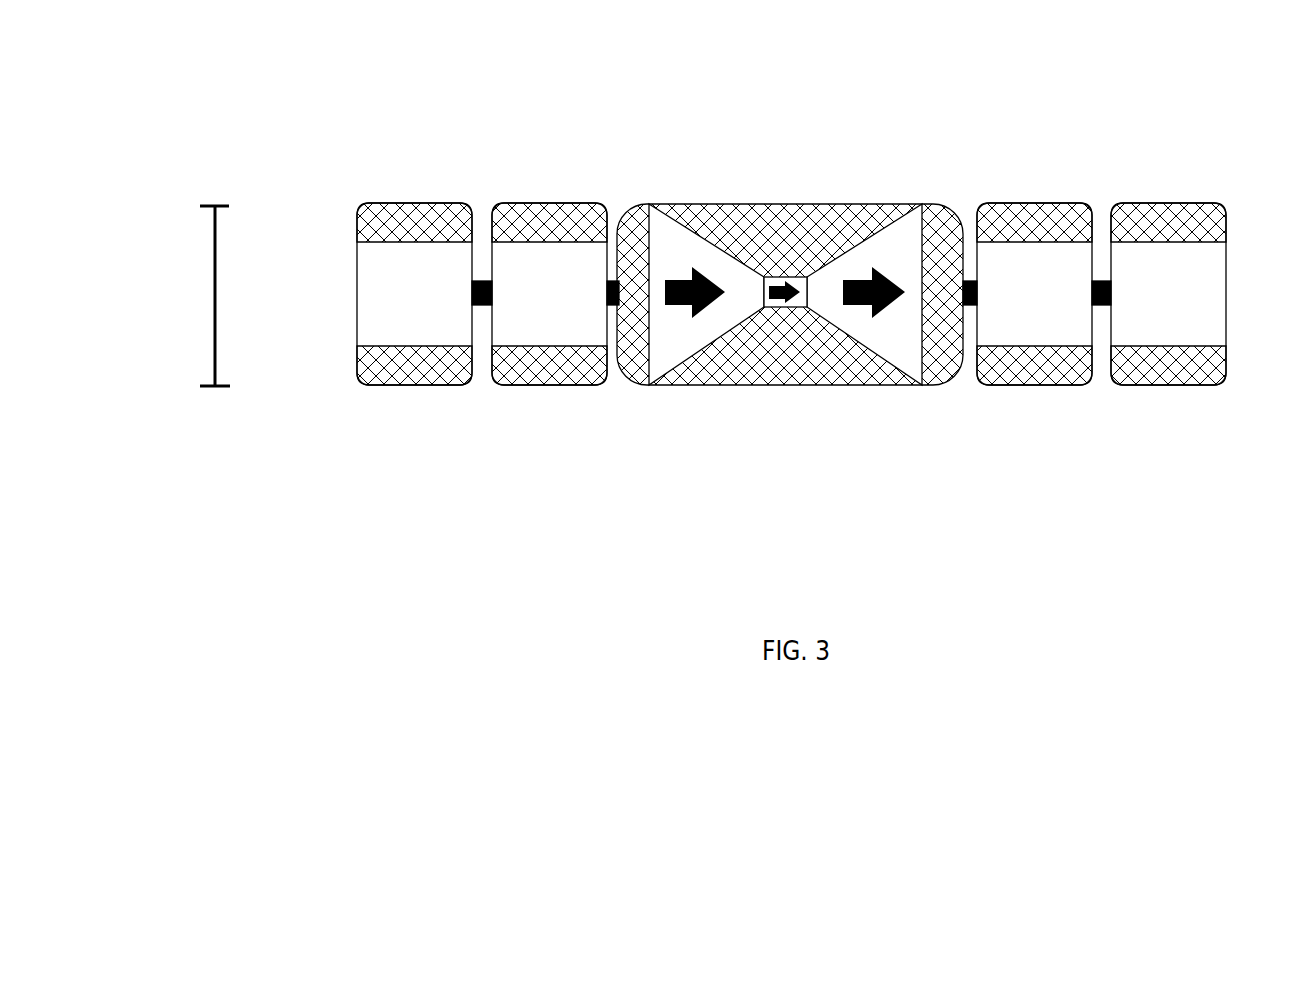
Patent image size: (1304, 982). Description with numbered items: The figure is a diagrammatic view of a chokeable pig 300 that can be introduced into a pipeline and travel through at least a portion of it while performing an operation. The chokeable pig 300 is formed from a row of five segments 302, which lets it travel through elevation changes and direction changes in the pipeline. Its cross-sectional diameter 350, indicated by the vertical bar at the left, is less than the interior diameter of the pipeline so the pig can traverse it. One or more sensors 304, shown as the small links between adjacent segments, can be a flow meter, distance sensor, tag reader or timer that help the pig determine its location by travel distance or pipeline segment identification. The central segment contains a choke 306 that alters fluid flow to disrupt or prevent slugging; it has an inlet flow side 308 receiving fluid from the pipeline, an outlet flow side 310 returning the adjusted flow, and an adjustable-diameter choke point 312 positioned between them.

The chokeable pig 300 is at (580, 76).
The segments 302 is at (413, 163).
The sensors 304 is at (573, 387).
The choke 306 is at (790, 285).
The inlet flow side 308 is at (705, 385).
The outlet flow side 310 is at (855, 385).
The choke point 312 is at (810, 385).
The cross-sectional diameter 350 is at (186, 296).